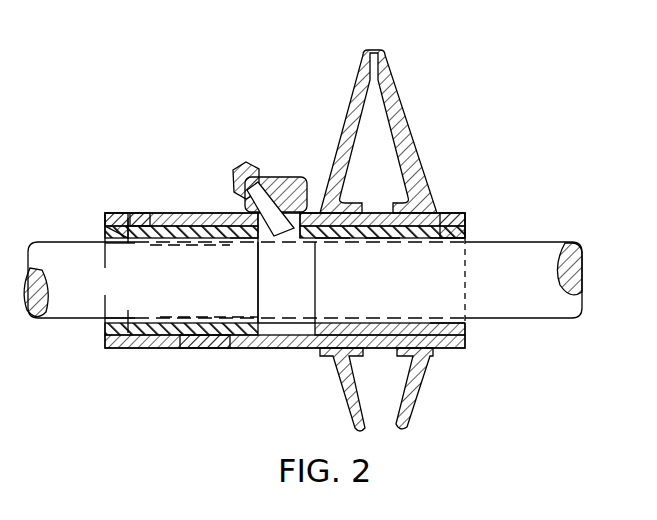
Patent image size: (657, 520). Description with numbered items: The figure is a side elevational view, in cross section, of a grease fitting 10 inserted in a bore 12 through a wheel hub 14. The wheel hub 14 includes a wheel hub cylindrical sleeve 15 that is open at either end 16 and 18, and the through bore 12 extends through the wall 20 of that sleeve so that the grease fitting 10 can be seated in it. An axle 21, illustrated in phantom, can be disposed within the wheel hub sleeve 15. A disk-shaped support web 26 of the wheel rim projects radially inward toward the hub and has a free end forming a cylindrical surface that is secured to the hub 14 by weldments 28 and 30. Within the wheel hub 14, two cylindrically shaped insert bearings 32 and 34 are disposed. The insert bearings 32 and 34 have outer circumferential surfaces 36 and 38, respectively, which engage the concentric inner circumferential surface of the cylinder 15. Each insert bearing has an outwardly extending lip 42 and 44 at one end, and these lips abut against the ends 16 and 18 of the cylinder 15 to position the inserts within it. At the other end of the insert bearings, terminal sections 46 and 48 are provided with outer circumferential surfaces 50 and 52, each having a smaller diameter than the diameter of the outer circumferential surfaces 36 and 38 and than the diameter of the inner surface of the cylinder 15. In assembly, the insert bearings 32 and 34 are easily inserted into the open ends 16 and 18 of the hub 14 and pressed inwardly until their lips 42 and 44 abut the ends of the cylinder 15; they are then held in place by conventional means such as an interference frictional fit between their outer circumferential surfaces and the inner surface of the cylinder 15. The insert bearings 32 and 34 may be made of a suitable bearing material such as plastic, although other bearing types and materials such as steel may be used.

The grease fitting 10 is at (290, 170).
The bore 12 is at (240, 212).
The wheel hub 14 is at (157, 208).
The wheel hub cylindrical sleeve 15 is at (137, 213).
The end of sleeve 16 is at (443, 320).
The end of sleeve 18 is at (130, 318).
The wall 20 is at (192, 348).
The axle 21 is at (540, 262).
The support web 26 is at (400, 131).
The weldment 28 is at (435, 356).
The weldment 30 is at (325, 354).
The insert bearing 32 is at (440, 243).
The insert bearing 34 is at (133, 244).
The outer circumferential surface 36 is at (385, 240).
The outer circumferential surface 38 is at (198, 243).
The outwardly extending lip 42 is at (455, 213).
The outwardly extending lip 44 is at (110, 215).
The terminal section 46 is at (333, 244).
The terminal section 48 is at (248, 240).
The outer circumferential surface 50 is at (313, 320).
The outer circumferential surface 52 is at (257, 320).